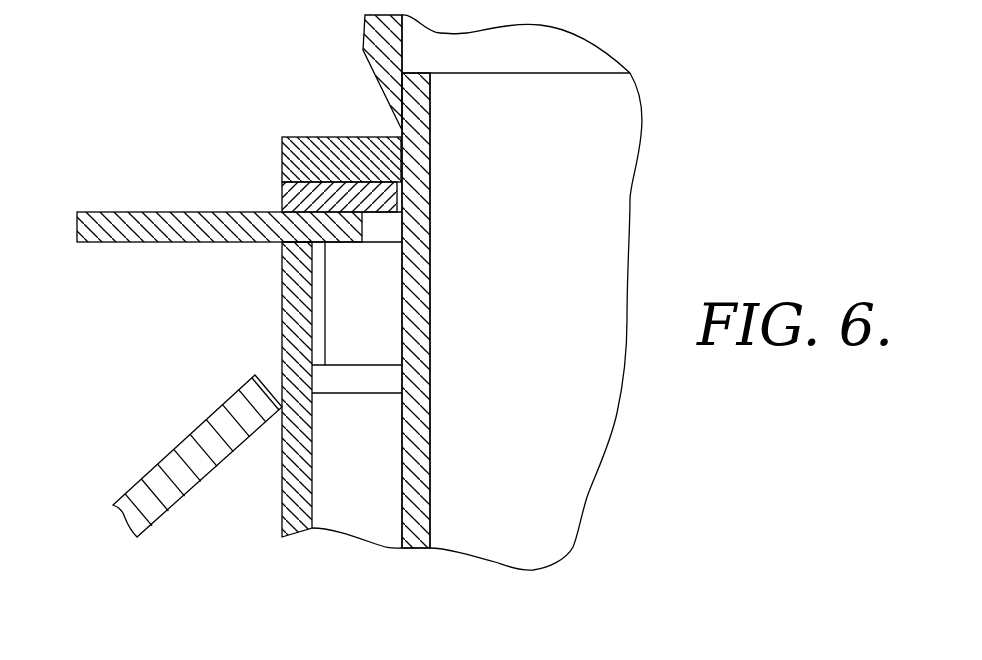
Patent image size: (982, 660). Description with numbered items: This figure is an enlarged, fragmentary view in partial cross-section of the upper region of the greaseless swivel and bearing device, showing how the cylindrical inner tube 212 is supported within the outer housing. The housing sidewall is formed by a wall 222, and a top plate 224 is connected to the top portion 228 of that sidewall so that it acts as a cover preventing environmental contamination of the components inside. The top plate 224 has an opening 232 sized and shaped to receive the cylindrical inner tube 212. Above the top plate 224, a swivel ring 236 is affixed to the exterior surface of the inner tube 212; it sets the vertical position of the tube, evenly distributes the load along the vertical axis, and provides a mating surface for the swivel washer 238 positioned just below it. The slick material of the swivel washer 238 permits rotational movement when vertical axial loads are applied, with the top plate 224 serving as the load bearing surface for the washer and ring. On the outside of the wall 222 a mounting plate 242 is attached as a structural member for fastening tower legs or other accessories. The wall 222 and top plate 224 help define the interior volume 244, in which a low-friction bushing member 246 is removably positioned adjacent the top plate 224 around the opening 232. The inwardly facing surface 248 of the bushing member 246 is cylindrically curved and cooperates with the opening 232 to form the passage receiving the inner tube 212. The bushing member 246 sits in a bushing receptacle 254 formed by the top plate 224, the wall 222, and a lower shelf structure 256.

The cylindrical inner tube 212 is at (430, 302).
The wall 222 is at (292, 340).
The top plate 224 is at (77, 228).
The top portion 228 is at (292, 250).
The opening 232 is at (385, 223).
The swivel ring 236 is at (282, 160).
The swivel washer 238 is at (282, 197).
The mounting plate 242 is at (182, 497).
The interior volume 244 is at (358, 495).
The bushing member 246 is at (383, 344).
The inwardly facing surface 248 is at (404, 267).
The bushing receptacle 254 is at (316, 302).
The lower shelf structure 256 is at (383, 385).